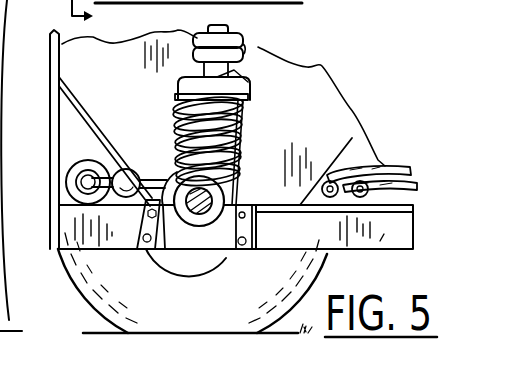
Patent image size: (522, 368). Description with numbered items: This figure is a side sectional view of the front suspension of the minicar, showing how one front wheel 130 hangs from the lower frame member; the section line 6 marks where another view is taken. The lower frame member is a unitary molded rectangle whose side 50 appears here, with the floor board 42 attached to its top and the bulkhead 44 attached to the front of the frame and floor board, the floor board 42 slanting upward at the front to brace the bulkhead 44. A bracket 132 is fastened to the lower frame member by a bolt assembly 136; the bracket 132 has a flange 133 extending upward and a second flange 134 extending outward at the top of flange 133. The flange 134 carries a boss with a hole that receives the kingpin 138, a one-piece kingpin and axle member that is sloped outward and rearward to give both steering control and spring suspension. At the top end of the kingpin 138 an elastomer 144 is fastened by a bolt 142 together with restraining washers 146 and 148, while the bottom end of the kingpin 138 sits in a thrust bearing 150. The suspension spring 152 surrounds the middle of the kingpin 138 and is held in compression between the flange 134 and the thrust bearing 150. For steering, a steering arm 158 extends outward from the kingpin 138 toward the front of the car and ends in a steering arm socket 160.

The section line 6- 6 is at (70, 12).
The floor board 42 is at (348, 156).
The bulkhead 44 is at (57, 208).
The side 50 is at (380, 238).
The front wheel 130 is at (222, 313).
The bracket 132 is at (324, 66).
The flange 133 is at (210, 252).
The flange 134 is at (246, 104).
The bolt assembly 136 is at (247, 215).
The kingpin 138 is at (174, 64).
The bolt 142 is at (218, 26).
The elastomer 144 is at (244, 50).
The restraining washer 146 is at (244, 10).
The restraining washer 148 is at (224, 80).
The thrust bearing 150 is at (177, 97).
The suspension spring 152 is at (180, 65).
The steering arm 158 is at (157, 264).
The steering arm socket 160 is at (133, 181).